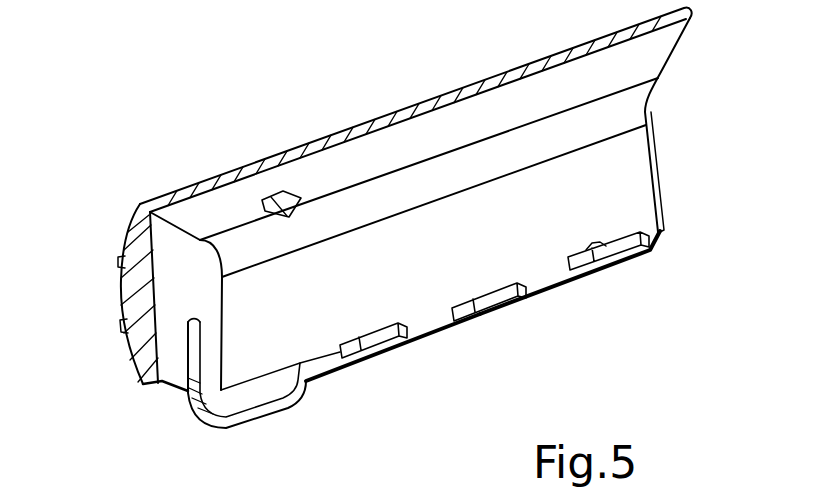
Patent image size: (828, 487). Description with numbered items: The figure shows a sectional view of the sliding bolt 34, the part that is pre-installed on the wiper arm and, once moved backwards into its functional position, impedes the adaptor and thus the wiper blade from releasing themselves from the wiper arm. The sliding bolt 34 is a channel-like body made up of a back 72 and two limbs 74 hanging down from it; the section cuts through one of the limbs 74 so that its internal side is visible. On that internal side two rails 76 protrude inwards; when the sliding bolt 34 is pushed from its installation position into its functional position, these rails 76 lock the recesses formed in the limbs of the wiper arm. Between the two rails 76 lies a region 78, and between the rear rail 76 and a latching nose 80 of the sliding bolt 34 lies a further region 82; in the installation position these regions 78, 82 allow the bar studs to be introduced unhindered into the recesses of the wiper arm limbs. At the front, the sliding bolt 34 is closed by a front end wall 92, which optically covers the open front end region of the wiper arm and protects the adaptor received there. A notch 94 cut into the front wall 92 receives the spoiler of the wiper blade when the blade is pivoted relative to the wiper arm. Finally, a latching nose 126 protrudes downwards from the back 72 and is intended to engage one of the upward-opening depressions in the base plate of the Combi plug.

The sliding bolt 34 is at (181, 148).
The back 72 is at (407, 116).
The limbs 74 is at (628, 177).
The rails 76 is at (373, 358).
The region 78 is at (437, 318).
The latching nose 80 is at (628, 266).
The region 82 is at (553, 283).
The front end wall 92 is at (136, 306).
The notch 94 is at (178, 389).
The latching nose 126 is at (283, 198).